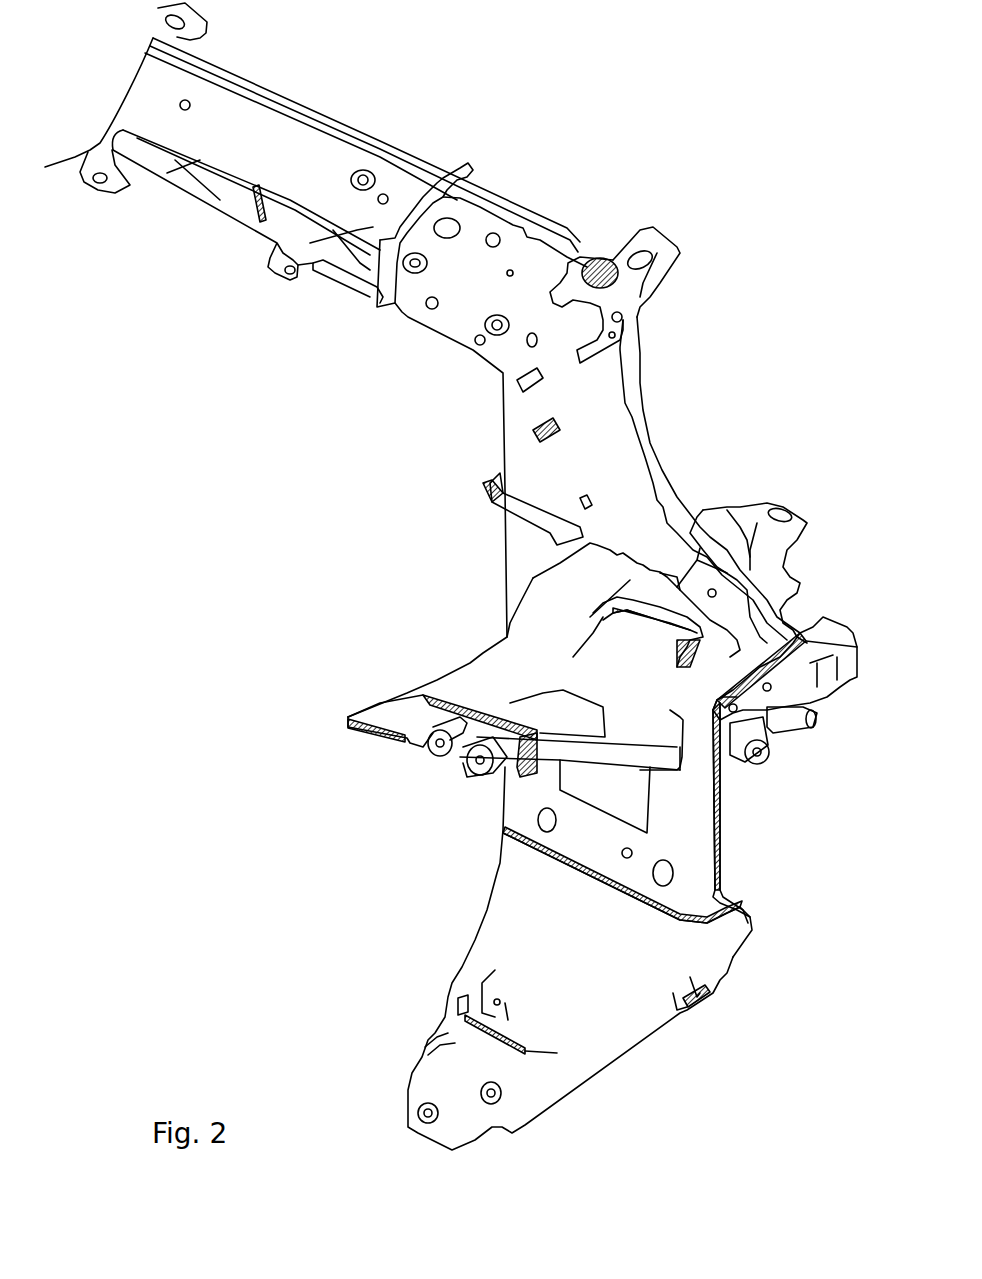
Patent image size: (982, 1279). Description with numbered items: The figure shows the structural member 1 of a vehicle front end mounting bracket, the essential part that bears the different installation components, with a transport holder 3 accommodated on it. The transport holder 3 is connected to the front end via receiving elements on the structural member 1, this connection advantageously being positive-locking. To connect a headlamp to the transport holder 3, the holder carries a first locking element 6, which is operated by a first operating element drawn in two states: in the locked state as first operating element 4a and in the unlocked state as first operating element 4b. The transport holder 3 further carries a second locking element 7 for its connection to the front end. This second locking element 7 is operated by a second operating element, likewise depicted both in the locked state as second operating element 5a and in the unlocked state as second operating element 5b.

The structural member 1 is at (581, 171).
The transport holder 3 is at (407, 690).
The first operating element (locked state) 4a is at (430, 755).
The first operating element (unlocked state) 4b is at (470, 780).
The second operating element (locked state) 5a is at (767, 765).
The second operating element (unlocked state) 5b is at (813, 740).
The first locking element 6 is at (478, 712).
The second locking element 7 is at (840, 690).